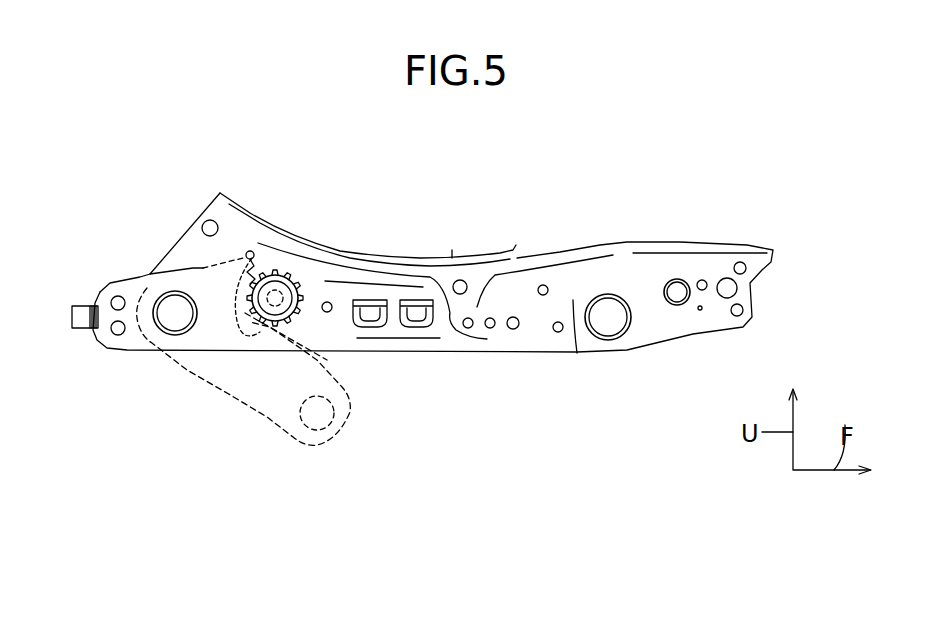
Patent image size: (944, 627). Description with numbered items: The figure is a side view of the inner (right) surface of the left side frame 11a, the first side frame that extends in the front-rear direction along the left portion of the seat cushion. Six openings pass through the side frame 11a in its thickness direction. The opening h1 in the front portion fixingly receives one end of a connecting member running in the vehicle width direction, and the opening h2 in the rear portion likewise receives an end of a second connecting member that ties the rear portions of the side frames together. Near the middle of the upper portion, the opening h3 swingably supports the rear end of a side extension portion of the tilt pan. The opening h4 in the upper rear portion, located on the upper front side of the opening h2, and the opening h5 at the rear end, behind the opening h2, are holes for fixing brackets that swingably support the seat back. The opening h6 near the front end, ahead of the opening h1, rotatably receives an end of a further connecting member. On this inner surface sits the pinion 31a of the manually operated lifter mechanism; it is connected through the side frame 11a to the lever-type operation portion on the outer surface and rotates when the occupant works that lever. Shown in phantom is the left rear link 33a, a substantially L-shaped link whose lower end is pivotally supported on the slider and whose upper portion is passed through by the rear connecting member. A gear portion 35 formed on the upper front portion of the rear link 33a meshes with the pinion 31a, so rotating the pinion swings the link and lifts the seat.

The opening h1 is at (613, 296).
The opening h2 is at (168, 292).
The opening h3 is at (465, 283).
The opening h4 is at (212, 221).
The opening h5 is at (97, 299).
The opening h6 is at (678, 282).
The left side frame 11a is at (452, 250).
The pinion 31a is at (280, 268).
The left rear link 33a is at (194, 383).
The gear portion 35 is at (304, 348).